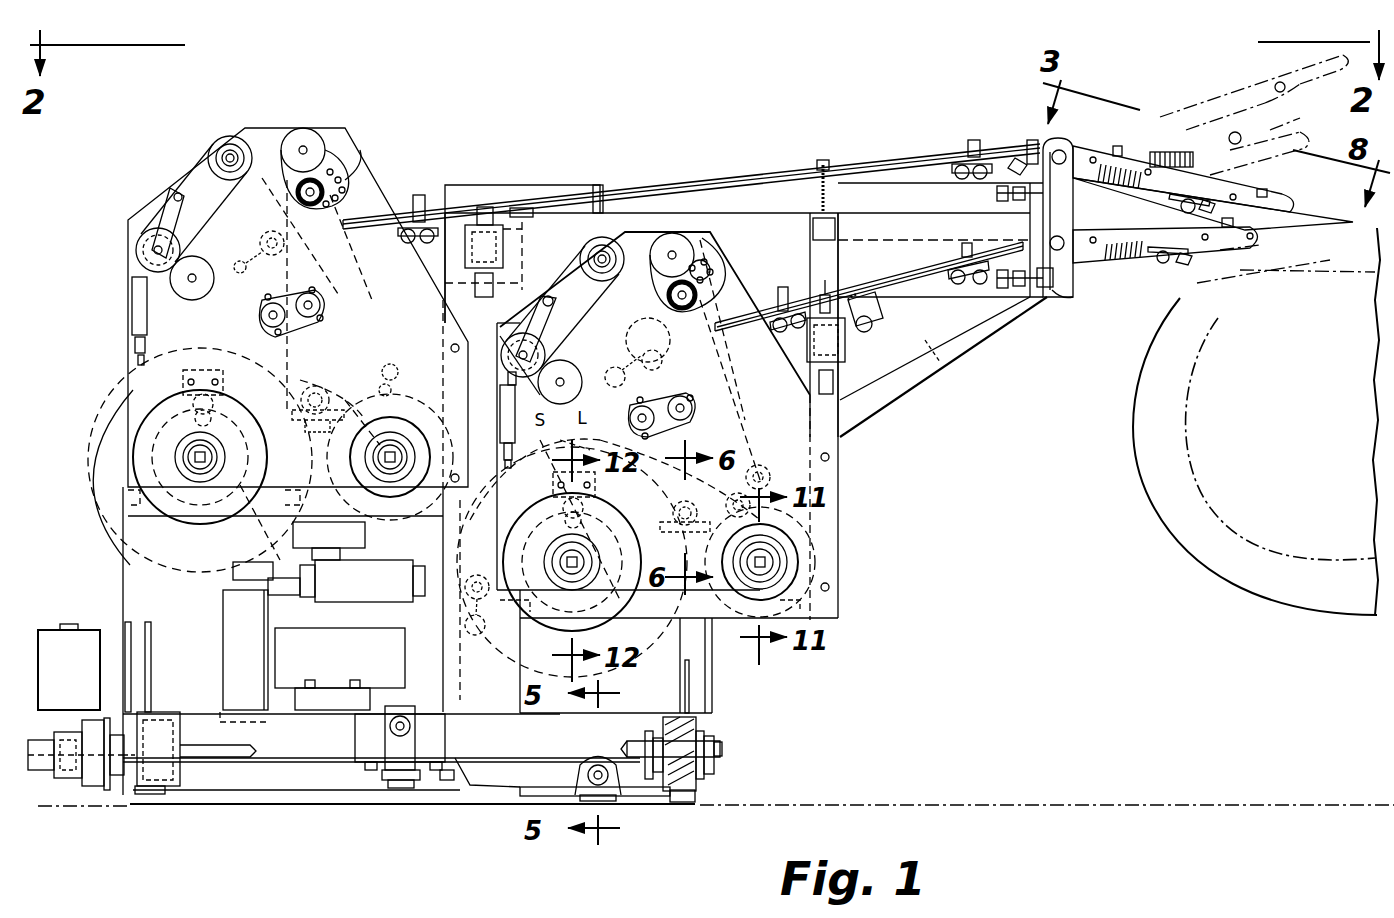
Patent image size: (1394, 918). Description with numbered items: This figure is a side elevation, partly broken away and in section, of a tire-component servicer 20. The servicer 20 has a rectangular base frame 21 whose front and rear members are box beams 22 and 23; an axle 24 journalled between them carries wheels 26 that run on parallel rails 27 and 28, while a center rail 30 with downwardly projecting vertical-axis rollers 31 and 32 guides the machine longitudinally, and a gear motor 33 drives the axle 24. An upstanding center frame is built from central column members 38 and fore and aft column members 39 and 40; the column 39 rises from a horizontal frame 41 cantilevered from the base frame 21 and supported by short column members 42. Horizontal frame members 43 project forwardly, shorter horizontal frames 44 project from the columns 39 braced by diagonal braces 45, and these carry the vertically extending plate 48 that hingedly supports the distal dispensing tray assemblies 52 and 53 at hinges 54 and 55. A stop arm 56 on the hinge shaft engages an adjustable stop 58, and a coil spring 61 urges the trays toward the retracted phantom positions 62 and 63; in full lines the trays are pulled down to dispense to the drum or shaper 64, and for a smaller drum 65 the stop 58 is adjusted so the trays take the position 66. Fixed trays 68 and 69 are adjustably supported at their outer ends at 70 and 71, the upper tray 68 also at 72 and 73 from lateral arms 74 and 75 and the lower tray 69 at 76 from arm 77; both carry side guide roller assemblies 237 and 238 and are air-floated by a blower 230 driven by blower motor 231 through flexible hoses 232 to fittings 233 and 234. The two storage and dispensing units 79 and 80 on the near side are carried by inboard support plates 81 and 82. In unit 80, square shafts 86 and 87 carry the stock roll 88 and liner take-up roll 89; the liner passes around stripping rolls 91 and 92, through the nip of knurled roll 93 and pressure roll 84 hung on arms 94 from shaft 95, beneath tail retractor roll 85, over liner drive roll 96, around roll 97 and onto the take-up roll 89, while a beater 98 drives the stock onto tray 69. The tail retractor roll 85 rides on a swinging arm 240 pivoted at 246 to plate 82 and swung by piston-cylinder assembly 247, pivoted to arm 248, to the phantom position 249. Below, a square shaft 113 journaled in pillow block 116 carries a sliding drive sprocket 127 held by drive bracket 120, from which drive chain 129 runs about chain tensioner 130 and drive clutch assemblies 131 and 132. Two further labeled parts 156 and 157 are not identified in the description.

The servicer 20 is at (595, 168).
The rectangular base frame 21 is at (292, 768).
The front box beam 22 is at (135, 775).
The rear box beam 23 is at (712, 785).
The axle 24 is at (228, 760).
The wheels 26 is at (160, 790).
The rail 27 is at (152, 790).
The rail 28 is at (672, 792).
The center rail 30 is at (410, 785).
The vertical axis roller 31 is at (368, 768).
The vertical axis roller 32 is at (440, 778).
The gear motor 33 is at (52, 636).
The central column members 38 is at (443, 668).
The fore column member 39 is at (838, 546).
The aft column member 40 is at (133, 390).
The horizontal frame 41 is at (716, 612).
The short column members 42 is at (690, 680).
The horizontal frame members 43 is at (912, 258).
The horizontal frames 44 is at (915, 290).
The diagonal braces 45 is at (980, 330).
The vertically extending plate 48 is at (1073, 292).
The distal component dispensing tray assembly 52 is at (1160, 200).
The distal component dispensing tray assembly 53 is at (1123, 262).
The hinge 54 is at (1060, 150).
The hinge 55 is at (1057, 236).
The stop arm 56 is at (1068, 298).
The adjustable stop 58 is at (1052, 290).
The coil spring 61 is at (1162, 150).
The retracted tray position 62 is at (1248, 80).
The retracted tray position 63 is at (1258, 135).
The drum or shaper 64 is at (1172, 330).
The smaller size drum 65 is at (1238, 330).
The tray position for smaller drum 66 is at (1280, 290).
The upper fixed tray 68 is at (748, 172).
The lower fixed tray 69 is at (902, 268).
The adjustable support 70 is at (1030, 142).
The adjustable support 71 is at (1038, 240).
The adjustable support 72 is at (505, 245).
The adjustable support 73 is at (830, 212).
The arm 74 is at (448, 258).
The arm 75 is at (812, 232).
The adjustable support 76 is at (825, 292).
The laterally projecting arm 77 is at (846, 348).
The storage and dispensing unit 79 is at (368, 146).
The storage and dispensing unit 80 is at (732, 247).
The inboard support plate 81 is at (148, 215).
The inboard support plate 82 is at (698, 235).
The pressure roll 84 is at (520, 340).
The tail retractor roll 85 is at (595, 242).
The square shaft 86 is at (590, 550).
The square shaft 87 is at (795, 560).
The stock roll 88 is at (556, 625).
The liner take-up roll 89 is at (775, 565).
The stripping roll 91 is at (645, 368).
The stripping roll 92 is at (690, 410).
The knurled roll 93 is at (582, 382).
The arms 94 is at (548, 332).
The shaft 95 is at (547, 298).
The liner drive roll 96 is at (675, 234).
The roll 97 is at (705, 312).
The beater 98 is at (700, 278).
The square shaft 113 is at (608, 800).
The pillow block 116 is at (590, 765).
The drive bracket 120 is at (530, 790).
The drive sprocket 127 is at (600, 740).
The drive chain 129 is at (478, 632).
The chain tensioner 130 is at (440, 608).
The drive clutch assembly 131 is at (340, 380).
The drive clutch assembly 132 is at (738, 490).
The roller 156 is at (740, 440).
The roller 157 is at (690, 540).
The blower 230 is at (222, 640).
The blower motor 231 is at (375, 630).
The flexible hoses 232 is at (425, 560).
The fitting 233 is at (521, 207).
The fitting 234 is at (882, 318).
The side guide roller assembly 237 is at (420, 193).
The side guide roller assembly 238 is at (975, 135).
The swinging arm 240 is at (600, 290).
The pivot 246 is at (560, 355).
The piston-cylinder assembly 247 is at (500, 395).
The arm 248 is at (470, 328).
The phantom line position 249 is at (705, 372).